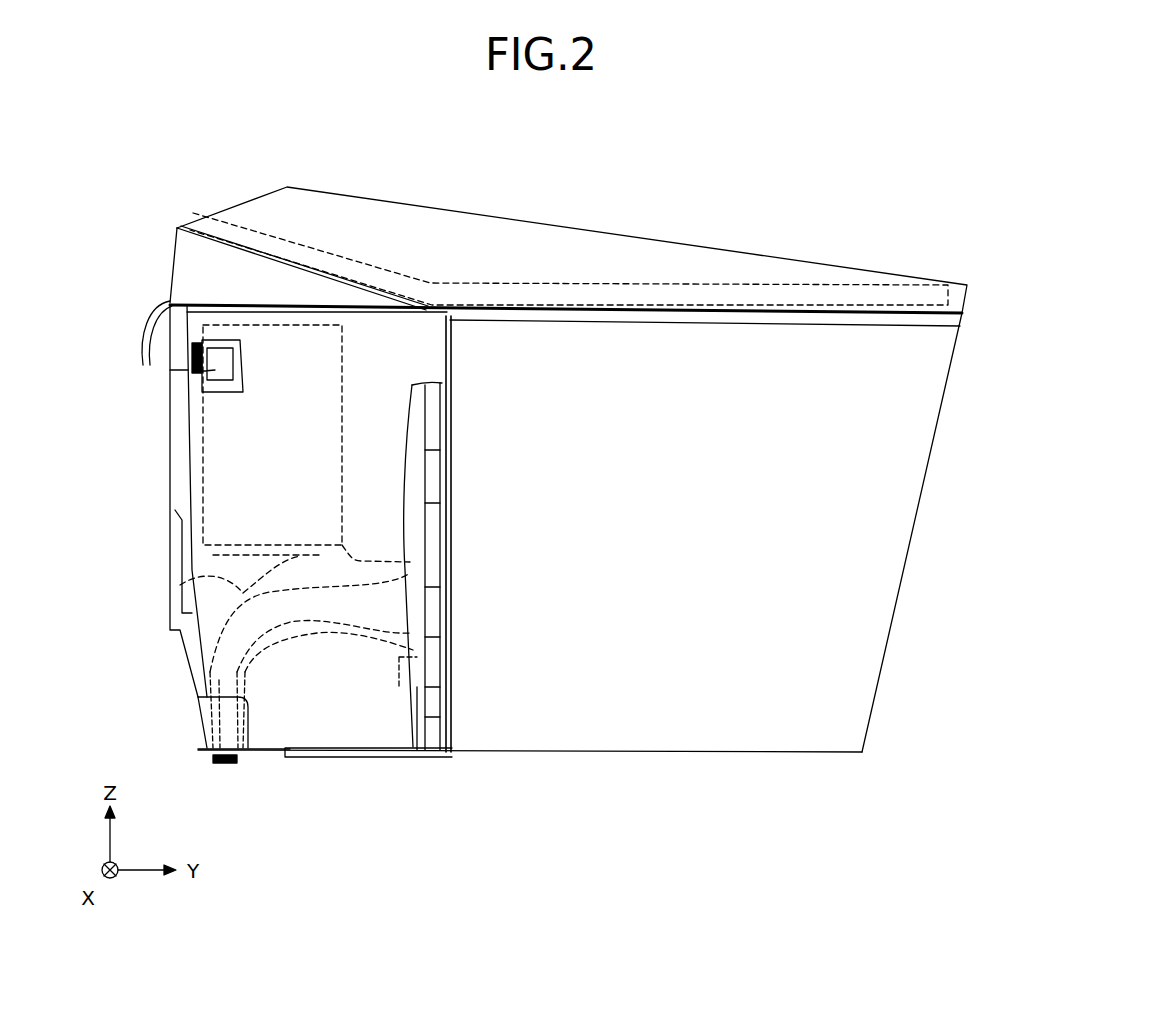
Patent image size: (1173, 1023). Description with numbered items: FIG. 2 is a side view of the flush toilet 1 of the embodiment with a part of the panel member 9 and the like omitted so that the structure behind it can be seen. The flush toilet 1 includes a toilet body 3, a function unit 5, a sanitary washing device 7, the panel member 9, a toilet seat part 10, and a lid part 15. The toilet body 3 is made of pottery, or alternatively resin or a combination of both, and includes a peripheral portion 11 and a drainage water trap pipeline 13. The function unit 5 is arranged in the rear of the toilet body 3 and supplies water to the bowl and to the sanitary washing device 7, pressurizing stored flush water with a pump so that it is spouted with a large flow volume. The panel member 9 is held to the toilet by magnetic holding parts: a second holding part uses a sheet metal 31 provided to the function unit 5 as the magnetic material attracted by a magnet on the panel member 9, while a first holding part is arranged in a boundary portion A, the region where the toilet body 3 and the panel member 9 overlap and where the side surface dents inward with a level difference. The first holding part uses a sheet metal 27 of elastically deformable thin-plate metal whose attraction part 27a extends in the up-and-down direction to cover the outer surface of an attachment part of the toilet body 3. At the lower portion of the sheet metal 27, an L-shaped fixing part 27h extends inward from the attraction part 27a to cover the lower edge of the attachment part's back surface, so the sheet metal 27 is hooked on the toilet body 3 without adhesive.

The flush toilet 1 is at (817, 185).
The toilet body 3 is at (723, 753).
The function unit 5 is at (327, 313).
The sanitary washing device 7 is at (185, 257).
The panel member 9 is at (327, 727).
The toilet seat part 10 is at (740, 290).
The peripheral portion 11 is at (804, 720).
The drainage water trap pipeline 13 is at (215, 580).
The lid part 15 is at (563, 243).
The sheet metal 27 is at (446, 552).
The attraction part 27a is at (435, 525).
The fixing part 27h is at (405, 688).
The sheet metal 31 is at (193, 375).
The boundary portion A is at (432, 750).